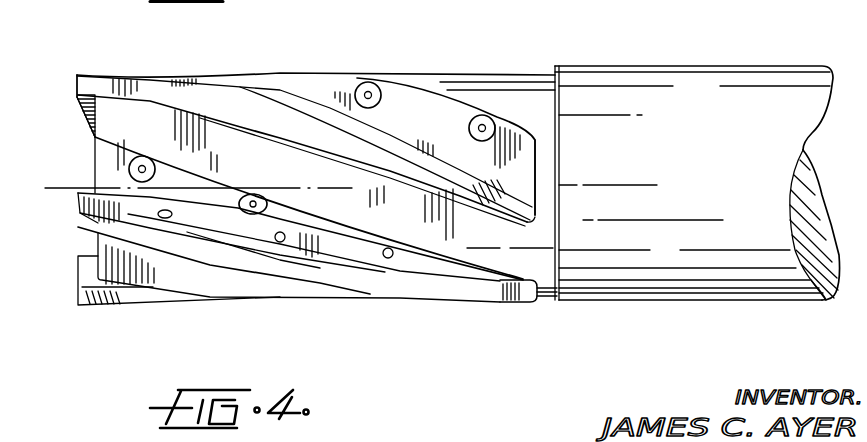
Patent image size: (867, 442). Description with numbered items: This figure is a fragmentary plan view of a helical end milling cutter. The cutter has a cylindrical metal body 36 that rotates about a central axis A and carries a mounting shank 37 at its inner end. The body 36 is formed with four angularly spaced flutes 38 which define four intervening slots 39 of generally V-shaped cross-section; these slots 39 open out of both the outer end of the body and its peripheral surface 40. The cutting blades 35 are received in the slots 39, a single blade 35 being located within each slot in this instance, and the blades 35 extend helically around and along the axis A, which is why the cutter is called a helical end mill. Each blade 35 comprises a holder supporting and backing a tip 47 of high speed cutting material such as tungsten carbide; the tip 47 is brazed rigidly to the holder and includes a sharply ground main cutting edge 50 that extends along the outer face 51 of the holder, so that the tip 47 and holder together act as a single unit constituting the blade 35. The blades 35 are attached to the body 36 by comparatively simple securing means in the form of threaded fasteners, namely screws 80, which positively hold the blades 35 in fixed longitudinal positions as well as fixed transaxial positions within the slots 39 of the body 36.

The cutting blade 35 is at (168, 81).
The cylindrical metal body 36 is at (462, 90).
The mounting shank 37 is at (716, 28).
The flute 38 is at (116, 116).
The slot 39 is at (527, 148).
The peripheral surface 40 is at (395, 77).
The tip 47 is at (80, 201).
The main cutting edge 50 is at (100, 40).
The outer face 51 is at (90, 228).
The screws 80 is at (156, 130).
The central axis A is at (600, 183).